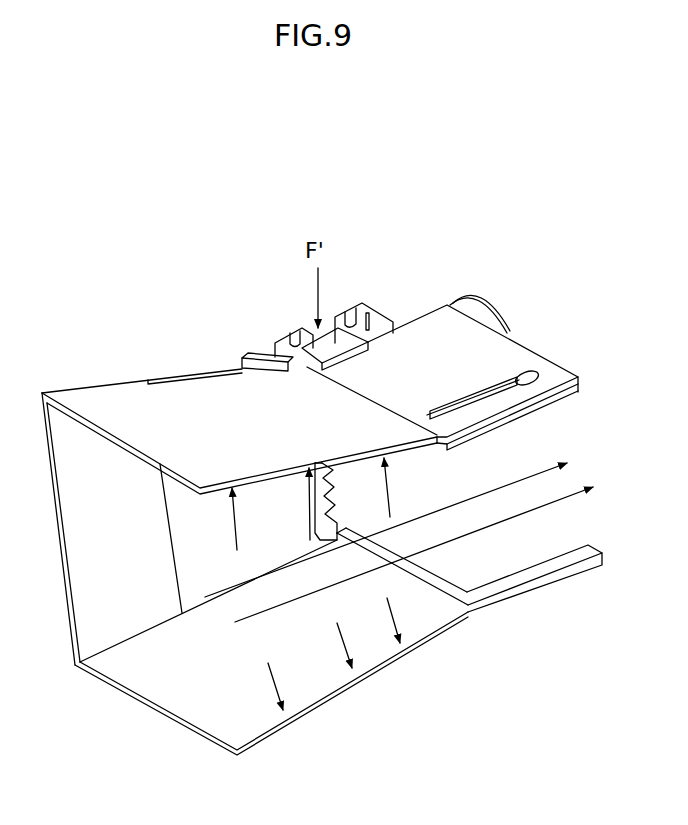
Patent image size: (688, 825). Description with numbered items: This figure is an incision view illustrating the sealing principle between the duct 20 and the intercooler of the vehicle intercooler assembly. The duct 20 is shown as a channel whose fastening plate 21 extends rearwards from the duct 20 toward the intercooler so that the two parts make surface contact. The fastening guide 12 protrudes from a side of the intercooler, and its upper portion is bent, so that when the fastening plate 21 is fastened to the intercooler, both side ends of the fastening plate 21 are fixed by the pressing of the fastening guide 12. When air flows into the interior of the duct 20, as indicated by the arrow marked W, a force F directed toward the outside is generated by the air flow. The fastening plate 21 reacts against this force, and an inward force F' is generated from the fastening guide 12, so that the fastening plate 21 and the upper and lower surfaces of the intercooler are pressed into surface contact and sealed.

The fastening guide 12 is at (345, 335).
The duct 20 is at (155, 687).
The fastening plate 21 is at (507, 358).